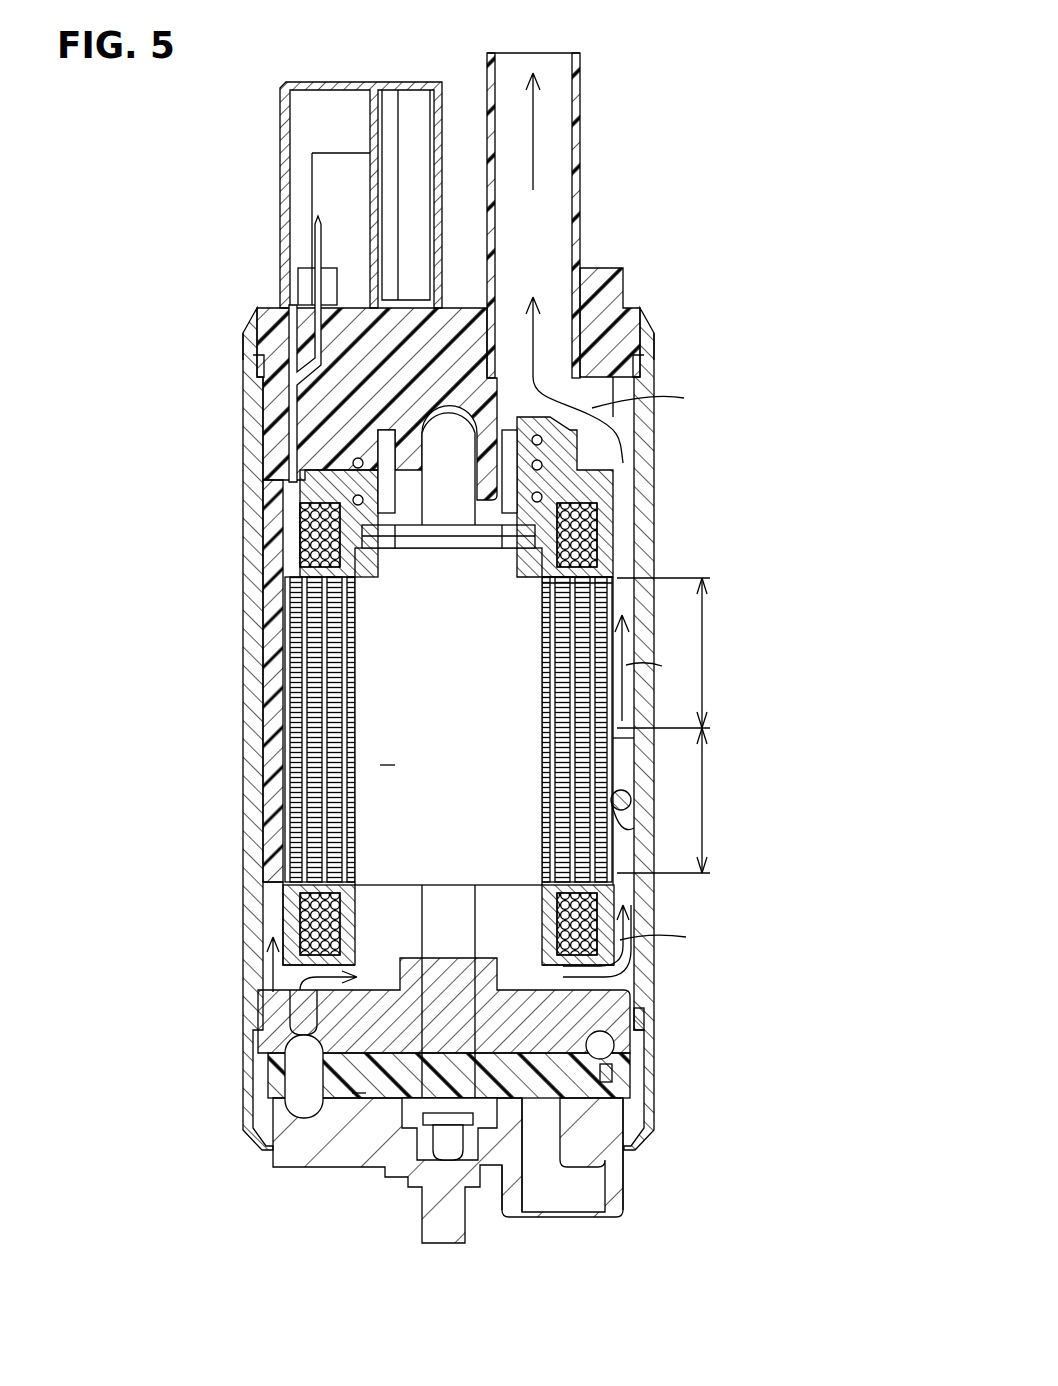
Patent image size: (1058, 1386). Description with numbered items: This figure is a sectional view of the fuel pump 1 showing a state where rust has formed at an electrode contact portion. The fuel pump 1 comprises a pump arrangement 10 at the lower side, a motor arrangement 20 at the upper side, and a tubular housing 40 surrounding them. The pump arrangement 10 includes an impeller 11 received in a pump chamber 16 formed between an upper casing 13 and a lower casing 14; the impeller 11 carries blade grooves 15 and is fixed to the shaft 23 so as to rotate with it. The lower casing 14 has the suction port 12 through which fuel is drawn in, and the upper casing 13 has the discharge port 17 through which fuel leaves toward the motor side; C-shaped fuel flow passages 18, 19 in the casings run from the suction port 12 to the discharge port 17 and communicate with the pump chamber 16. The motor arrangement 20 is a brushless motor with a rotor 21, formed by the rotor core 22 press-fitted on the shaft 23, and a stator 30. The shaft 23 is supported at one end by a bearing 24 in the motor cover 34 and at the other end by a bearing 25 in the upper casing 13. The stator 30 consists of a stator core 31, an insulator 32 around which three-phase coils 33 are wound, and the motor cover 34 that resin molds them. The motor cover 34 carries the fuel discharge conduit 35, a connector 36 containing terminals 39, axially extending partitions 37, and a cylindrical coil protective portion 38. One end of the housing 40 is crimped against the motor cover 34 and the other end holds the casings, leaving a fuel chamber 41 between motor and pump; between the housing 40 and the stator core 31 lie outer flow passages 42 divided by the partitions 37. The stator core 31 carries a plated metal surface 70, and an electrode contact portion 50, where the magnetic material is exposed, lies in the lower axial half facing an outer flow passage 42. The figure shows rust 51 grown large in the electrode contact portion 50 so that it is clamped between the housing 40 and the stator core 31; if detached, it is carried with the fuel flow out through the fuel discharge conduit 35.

The fuel pump 1 is at (683, 87).
The pump arrangement 10 is at (381, 1100).
The impeller 11 is at (268, 1094).
The suction port 12 is at (585, 1196).
The upper casing 13 is at (274, 1046).
The lower casing 14 is at (265, 1137).
The blade grooves 15 is at (614, 1052).
The pump chamber 16 is at (359, 1095).
The discharge port 17 is at (270, 968).
The fuel flow passage 18 is at (301, 1108).
The fuel flow passage 19 is at (642, 1018).
The motor arrangement 20 is at (415, 763).
The rotor 21 is at (388, 709).
The rotor core 22 is at (388, 767).
The shaft 23 is at (440, 901).
The bearing 24 is at (393, 481).
The bearing 25 is at (517, 1085).
The stator 30 is at (290, 651).
The stator core 31 is at (582, 604).
The insulator 32 is at (608, 522).
The coils 33 is at (318, 549).
The motor cover 34 is at (255, 347).
The fuel discharge conduit 35 is at (517, 90).
The connector 36 is at (281, 130).
The partitions 37 is at (274, 814).
The coil protective portion 38 is at (273, 941).
The terminals 39 is at (320, 215).
The housing 40 is at (250, 420).
The fuel chamber 41 is at (632, 981).
The outer flow passages 42 is at (626, 759).
The electrode contact portion 50 is at (619, 827).
The rust 51 is at (637, 802).
The plated metal surface 70 is at (615, 740).